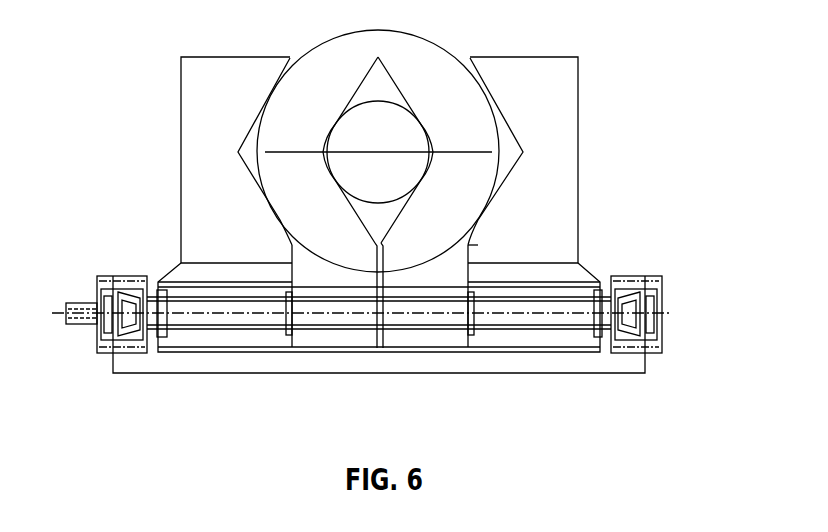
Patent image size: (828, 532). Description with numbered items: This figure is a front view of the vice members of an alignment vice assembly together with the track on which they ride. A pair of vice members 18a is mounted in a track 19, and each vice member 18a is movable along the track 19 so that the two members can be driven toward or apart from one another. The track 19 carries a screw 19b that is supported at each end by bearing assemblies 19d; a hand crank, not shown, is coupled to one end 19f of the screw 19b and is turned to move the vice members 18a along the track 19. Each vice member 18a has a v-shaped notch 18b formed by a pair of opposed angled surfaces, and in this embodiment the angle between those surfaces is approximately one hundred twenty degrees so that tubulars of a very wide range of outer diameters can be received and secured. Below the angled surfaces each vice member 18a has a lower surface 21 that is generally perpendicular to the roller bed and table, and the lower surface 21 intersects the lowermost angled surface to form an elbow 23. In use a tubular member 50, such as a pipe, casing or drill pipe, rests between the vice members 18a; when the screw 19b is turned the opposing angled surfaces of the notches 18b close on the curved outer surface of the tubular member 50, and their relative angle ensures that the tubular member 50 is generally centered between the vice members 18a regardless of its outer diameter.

The vice member 18a is at (238, 57).
The v-shaped notch 18b is at (523, 152).
The tubular member 50 is at (415, 35).
The lower surface 21 is at (292, 255).
The elbow 23 is at (470, 250).
The track assembly 19 is at (636, 365).
The screw 19b is at (242, 316).
The bearing assembly 19d is at (107, 276).
The end of screw 19f is at (79, 328).